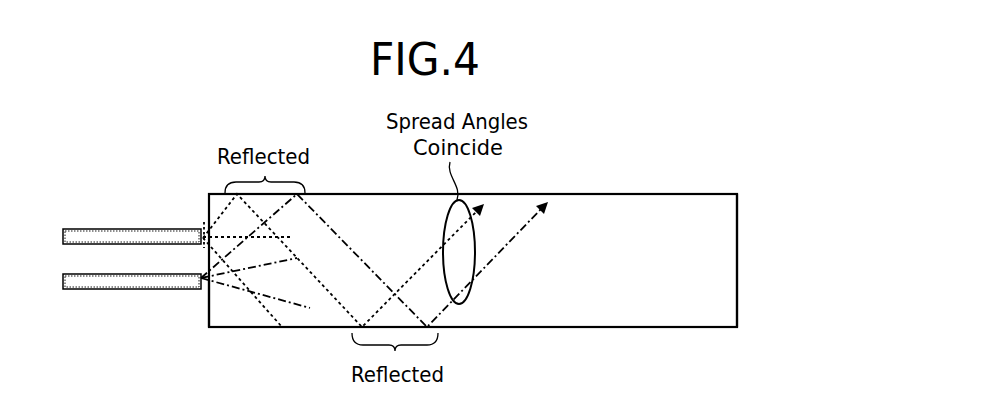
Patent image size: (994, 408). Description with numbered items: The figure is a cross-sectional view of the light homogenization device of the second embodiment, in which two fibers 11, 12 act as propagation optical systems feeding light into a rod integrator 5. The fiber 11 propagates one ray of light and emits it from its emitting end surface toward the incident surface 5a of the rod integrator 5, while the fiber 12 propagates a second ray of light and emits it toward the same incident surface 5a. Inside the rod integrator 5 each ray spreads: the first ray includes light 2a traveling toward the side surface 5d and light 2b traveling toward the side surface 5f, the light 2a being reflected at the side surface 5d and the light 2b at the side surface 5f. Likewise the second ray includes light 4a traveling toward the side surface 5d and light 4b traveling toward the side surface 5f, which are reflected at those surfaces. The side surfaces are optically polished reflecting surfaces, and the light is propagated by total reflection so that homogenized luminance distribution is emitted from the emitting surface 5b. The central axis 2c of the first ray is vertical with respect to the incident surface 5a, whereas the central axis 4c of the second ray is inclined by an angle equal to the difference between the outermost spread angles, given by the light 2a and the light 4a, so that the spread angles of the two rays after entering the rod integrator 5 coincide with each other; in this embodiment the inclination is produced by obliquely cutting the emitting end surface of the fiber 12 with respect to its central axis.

The rod integrator 5 is at (528, 336).
The incident surface 5a is at (208, 313).
The emitting surface 5b is at (737, 262).
The side surface 5d is at (663, 194).
The side surface 5f is at (650, 327).
The fiber 11 is at (108, 228).
The fiber 12 is at (100, 290).
The light traveling toward the side surface 5d 2a is at (225, 197).
The light traveling toward the side surface 5f 2b is at (272, 317).
The central axis of the ray of light 2 2c is at (221, 234).
The light traveling toward the side surface 5d 4a is at (290, 200).
The light traveling toward the side surface 5f 4b is at (248, 296).
The central axis of the ray of light 4 4c is at (250, 268).